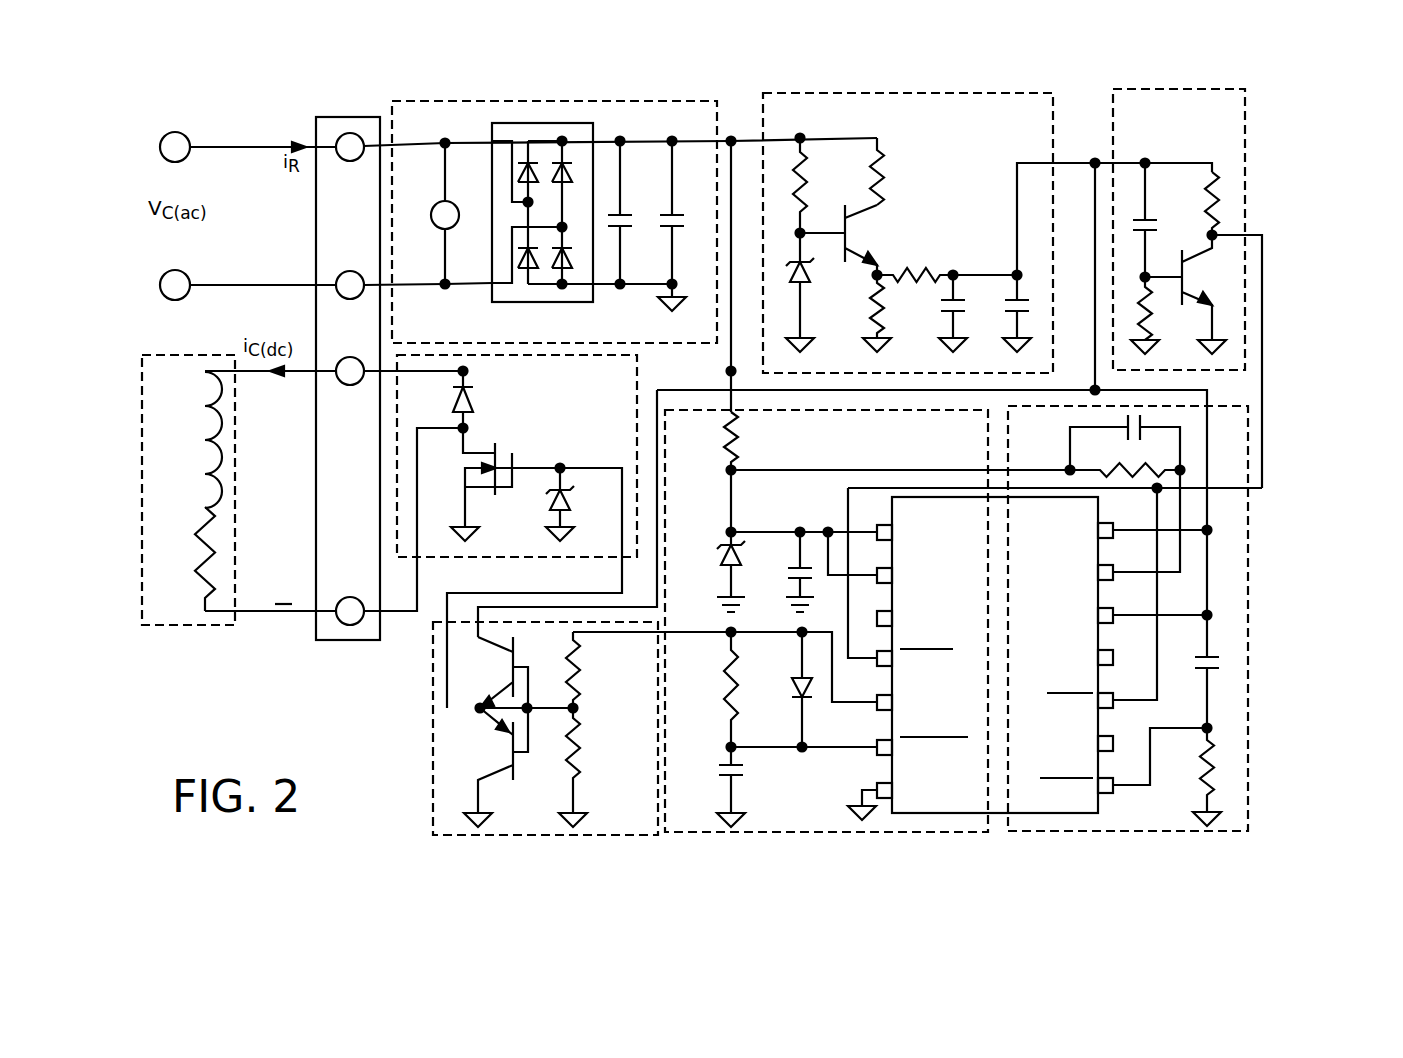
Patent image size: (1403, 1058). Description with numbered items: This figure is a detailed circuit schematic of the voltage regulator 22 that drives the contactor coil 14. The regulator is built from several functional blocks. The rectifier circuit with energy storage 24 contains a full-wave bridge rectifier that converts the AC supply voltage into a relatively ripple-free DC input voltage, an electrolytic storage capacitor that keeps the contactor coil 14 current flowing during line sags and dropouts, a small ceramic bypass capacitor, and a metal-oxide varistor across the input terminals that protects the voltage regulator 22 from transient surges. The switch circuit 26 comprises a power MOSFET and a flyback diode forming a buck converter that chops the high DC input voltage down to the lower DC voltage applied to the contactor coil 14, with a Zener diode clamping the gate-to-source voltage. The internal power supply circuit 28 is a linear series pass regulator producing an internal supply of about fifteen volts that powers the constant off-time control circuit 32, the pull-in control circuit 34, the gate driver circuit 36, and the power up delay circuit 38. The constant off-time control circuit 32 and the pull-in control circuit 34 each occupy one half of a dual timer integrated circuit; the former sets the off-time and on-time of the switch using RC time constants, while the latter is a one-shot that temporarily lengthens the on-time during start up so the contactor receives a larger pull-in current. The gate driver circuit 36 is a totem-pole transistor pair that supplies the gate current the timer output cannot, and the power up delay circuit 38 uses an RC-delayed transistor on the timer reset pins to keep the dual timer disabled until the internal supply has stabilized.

The contactor coil 14 is at (205, 627).
The voltage regulator 22 is at (1280, 186).
The rectifier circuit with energy storage 24 is at (620, 98).
The switch circuit 26 is at (515, 560).
The internal power supply circuit 28 is at (935, 92).
The constant off-time control circuit 32 is at (790, 838).
The pull-in control circuit 34 is at (1125, 838).
The gate driver circuit 36 is at (430, 722).
The power up delay circuit 38 is at (1228, 86).